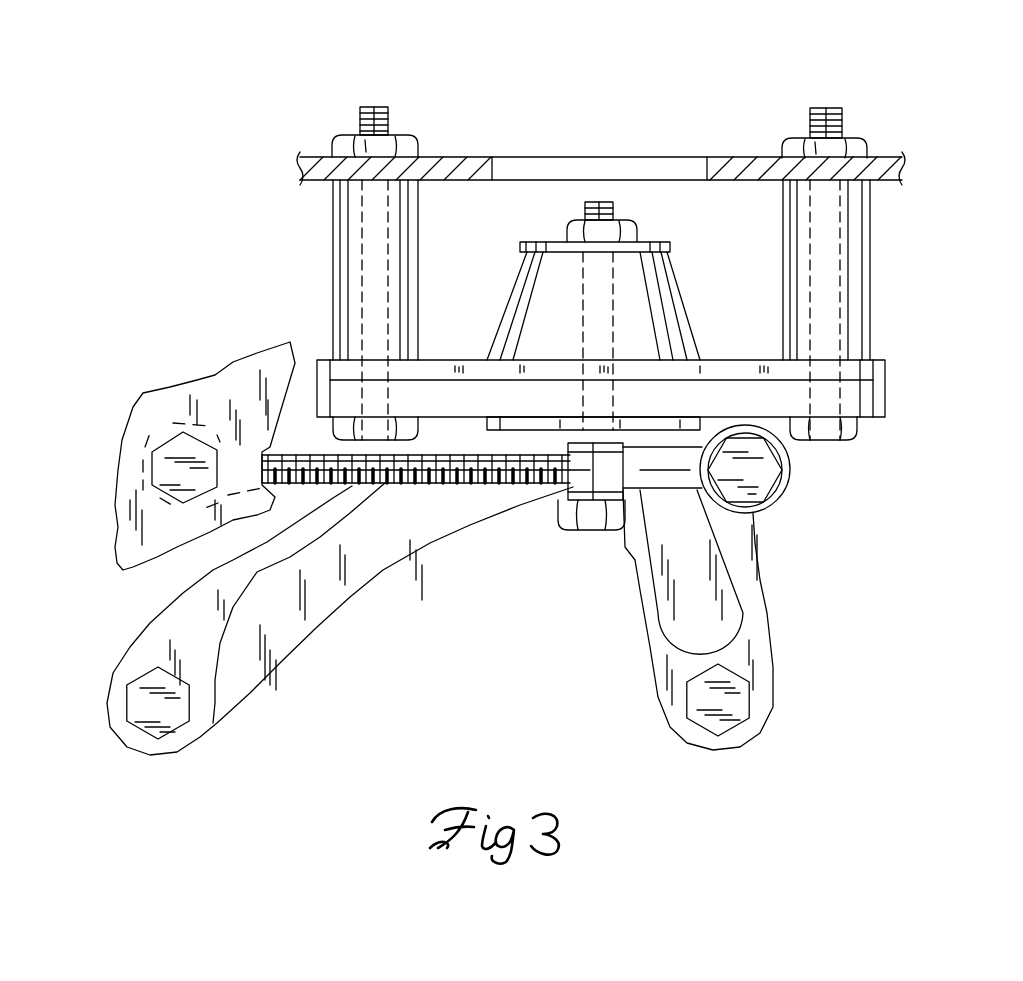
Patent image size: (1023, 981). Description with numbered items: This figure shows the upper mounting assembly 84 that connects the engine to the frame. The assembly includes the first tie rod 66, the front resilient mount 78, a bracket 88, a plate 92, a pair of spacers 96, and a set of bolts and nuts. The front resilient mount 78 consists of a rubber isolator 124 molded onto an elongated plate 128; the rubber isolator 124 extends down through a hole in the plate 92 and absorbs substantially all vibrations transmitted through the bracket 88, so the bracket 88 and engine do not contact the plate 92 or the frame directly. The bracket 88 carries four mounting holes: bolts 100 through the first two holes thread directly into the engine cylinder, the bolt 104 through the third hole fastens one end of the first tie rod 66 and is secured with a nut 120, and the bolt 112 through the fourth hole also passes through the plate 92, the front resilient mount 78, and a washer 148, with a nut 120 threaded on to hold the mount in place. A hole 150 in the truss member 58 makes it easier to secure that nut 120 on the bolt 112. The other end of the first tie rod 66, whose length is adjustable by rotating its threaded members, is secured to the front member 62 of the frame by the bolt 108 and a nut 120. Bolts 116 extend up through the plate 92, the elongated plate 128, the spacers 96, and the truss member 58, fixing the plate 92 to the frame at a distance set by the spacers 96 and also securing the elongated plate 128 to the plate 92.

The truss member 58 is at (750, 165).
The front member 62 is at (212, 395).
The first tie rod 66 is at (435, 475).
The front resilient mount 78 is at (740, 294).
The upper mounting assembly 84 is at (254, 238).
The bracket 88 is at (697, 607).
The plate 92 is at (765, 395).
The spacers 96 is at (395, 240).
The bolts 100 is at (730, 705).
The bolt 104 is at (765, 475).
The bolt 108 is at (178, 474).
The bolt 112 is at (600, 530).
The bolts 116 is at (832, 440).
The nuts 120 is at (375, 152).
The rubber isolator 124 is at (642, 293).
The elongated plate 128 is at (795, 372).
The washer 148 is at (548, 242).
The hole 150 is at (707, 172).